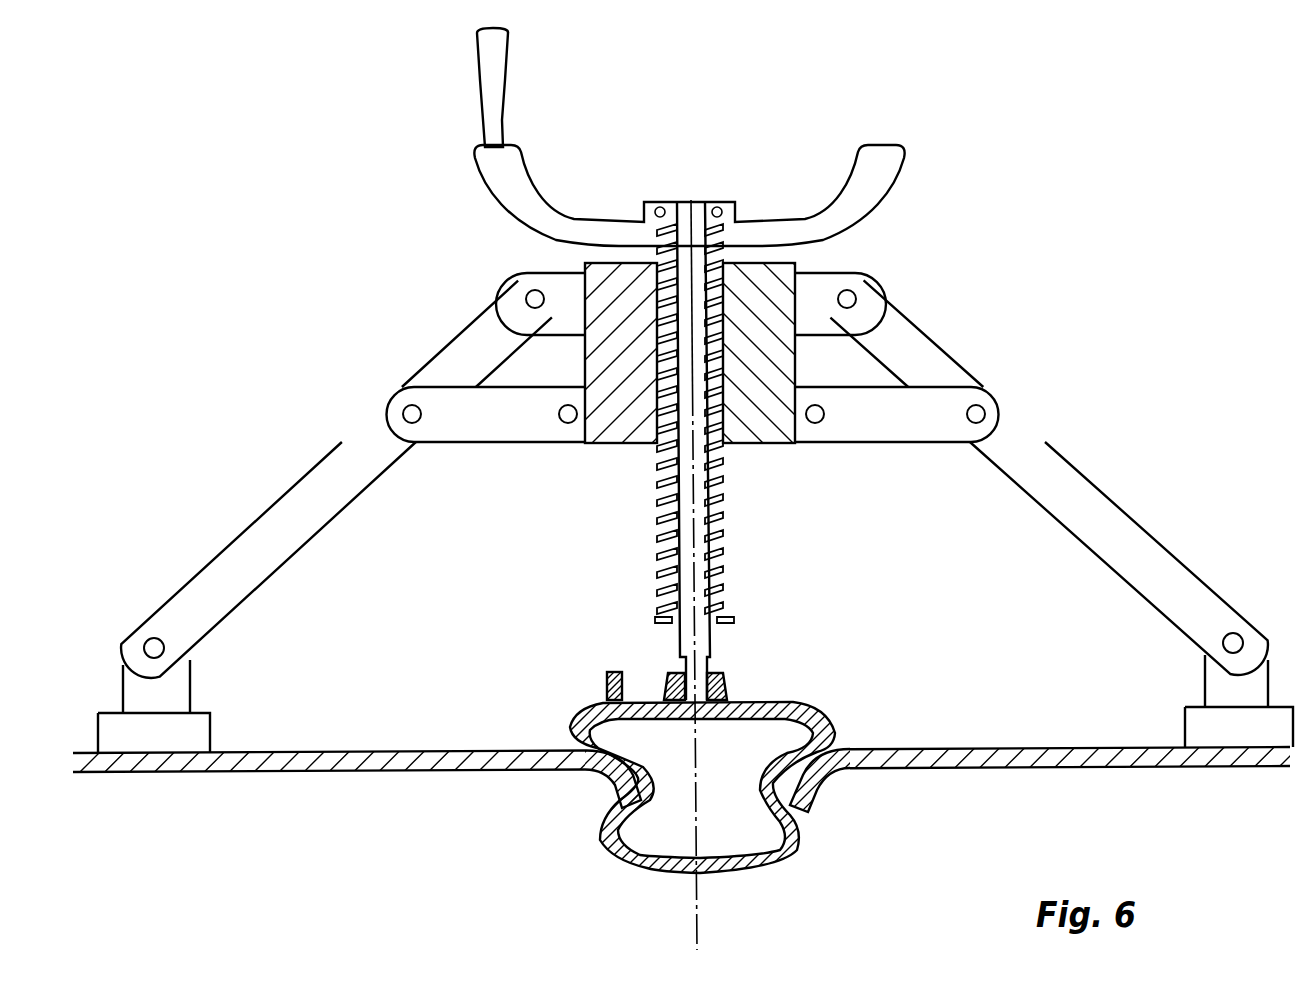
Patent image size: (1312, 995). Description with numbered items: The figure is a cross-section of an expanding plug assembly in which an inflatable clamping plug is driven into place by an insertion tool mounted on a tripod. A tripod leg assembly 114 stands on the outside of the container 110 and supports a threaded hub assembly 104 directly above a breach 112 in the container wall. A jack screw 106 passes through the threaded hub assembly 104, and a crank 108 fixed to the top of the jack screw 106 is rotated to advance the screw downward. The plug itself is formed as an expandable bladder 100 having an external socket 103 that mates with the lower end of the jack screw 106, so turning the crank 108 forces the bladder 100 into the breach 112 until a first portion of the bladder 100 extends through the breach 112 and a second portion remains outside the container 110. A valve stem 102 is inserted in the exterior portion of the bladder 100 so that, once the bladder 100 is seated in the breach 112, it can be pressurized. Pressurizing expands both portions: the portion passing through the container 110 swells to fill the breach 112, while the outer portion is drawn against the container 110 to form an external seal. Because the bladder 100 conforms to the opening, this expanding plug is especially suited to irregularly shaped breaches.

The expandable bladder 100 is at (787, 850).
The valve stem 102 is at (607, 687).
The external socket 103 is at (717, 688).
The threaded hub assembly 104 is at (780, 273).
The jack screw 106 is at (687, 533).
The crank 108 is at (893, 152).
The container 110 is at (1023, 748).
The breach 112 is at (803, 803).
The tripod leg assembly 114 is at (1056, 468).